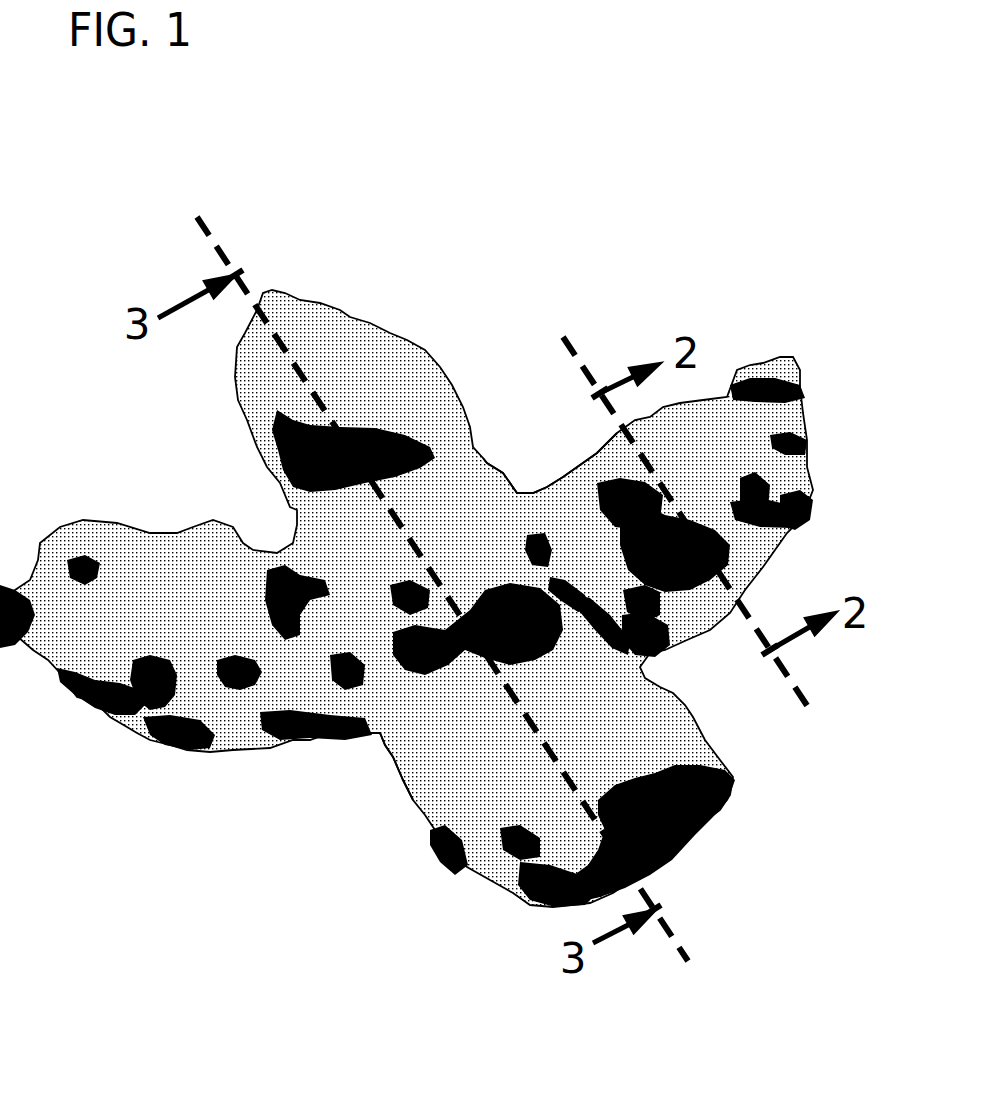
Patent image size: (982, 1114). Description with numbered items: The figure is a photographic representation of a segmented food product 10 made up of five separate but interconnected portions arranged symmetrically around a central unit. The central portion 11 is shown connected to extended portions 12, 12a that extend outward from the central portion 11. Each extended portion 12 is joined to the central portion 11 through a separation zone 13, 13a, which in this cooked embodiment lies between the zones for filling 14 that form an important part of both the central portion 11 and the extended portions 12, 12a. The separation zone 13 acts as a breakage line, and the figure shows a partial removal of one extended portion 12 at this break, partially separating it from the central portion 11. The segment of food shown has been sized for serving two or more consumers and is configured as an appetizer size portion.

The abrasive article 10 is at (598, 236).
The central portion 11 is at (458, 530).
The extended portion 12 is at (450, 807).
The lobe 12a is at (750, 463).
The separation zone 13 is at (403, 682).
The junction region 13a is at (554, 551).
The zone for filling 14 is at (255, 565).